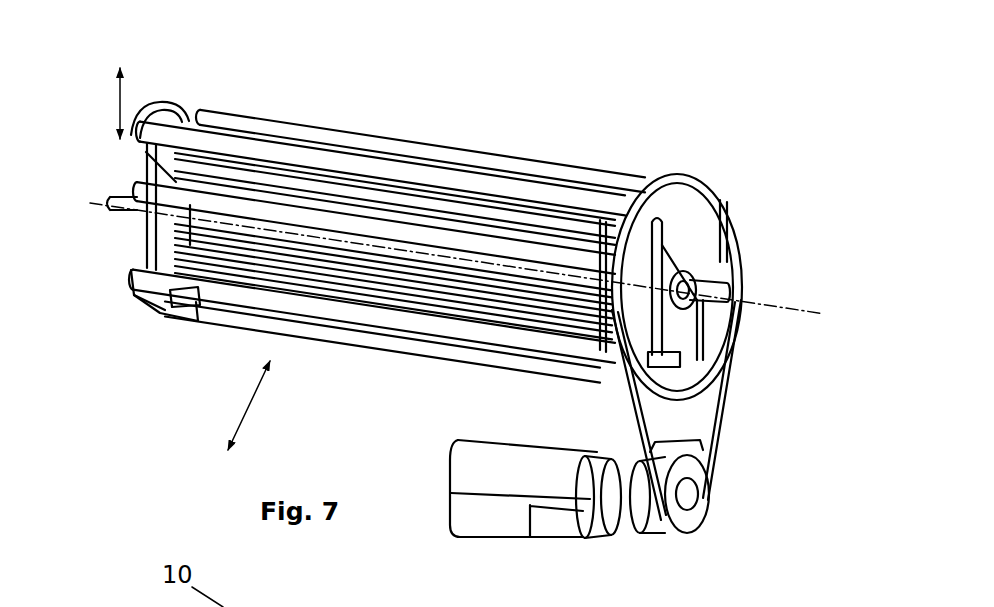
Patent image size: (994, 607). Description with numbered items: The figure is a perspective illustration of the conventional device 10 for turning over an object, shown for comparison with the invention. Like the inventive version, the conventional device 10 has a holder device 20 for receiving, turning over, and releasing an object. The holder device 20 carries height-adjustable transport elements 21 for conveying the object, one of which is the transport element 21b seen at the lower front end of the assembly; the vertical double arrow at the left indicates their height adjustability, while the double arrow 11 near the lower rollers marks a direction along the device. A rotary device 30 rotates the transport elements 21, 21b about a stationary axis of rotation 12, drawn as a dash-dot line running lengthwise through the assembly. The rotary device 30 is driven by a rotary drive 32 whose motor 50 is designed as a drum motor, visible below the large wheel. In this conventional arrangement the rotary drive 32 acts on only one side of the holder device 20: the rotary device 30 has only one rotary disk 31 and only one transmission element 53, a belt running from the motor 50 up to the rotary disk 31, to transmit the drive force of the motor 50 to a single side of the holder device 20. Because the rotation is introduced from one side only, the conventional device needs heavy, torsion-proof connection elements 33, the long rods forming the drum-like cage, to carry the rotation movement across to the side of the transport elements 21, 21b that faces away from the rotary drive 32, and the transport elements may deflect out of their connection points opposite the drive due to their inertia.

The device for turning over an object 10 is at (287, 63).
The conveying direction arrow 11 is at (243, 405).
The axis of rotation 12 is at (800, 311).
The holder device 20 is at (124, 278).
The transport elements 21 is at (180, 198).
The transport element 21b is at (163, 281).
The rotary device 30 is at (746, 278).
The rotary disk 31 is at (730, 204).
The rotary drive 32 is at (586, 540).
The connection elements 33 is at (577, 197).
The motor 50 is at (512, 487).
The transmission element 53 is at (710, 445).